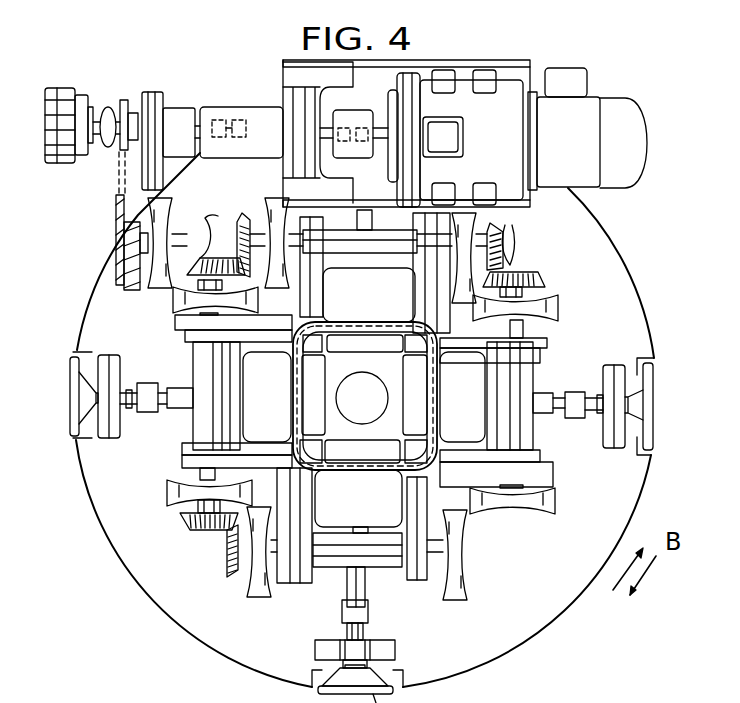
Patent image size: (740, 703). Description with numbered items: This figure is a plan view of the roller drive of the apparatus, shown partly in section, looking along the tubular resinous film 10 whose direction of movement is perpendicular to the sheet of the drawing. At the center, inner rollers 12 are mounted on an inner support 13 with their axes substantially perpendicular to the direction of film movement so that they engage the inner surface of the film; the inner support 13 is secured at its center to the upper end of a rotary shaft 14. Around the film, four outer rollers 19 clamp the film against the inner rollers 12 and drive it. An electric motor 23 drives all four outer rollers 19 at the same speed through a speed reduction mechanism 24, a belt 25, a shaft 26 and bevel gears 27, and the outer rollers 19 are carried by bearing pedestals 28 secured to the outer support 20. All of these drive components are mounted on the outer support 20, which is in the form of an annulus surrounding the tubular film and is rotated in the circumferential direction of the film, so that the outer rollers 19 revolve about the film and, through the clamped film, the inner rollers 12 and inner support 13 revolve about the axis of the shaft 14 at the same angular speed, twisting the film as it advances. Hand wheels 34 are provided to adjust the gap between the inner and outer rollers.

The tubular resinous film 10 is at (295, 377).
The inner rollers 12 is at (397, 342).
The inner support 13 is at (338, 460).
The rotary shaft 14 is at (362, 398).
The outer rollers 19 is at (345, 297).
The outer support 20 is at (505, 652).
The electric motor 23 is at (578, 113).
The speed reduction mechanism 24 is at (273, 120).
The belt 25 is at (120, 178).
The shaft 26 is at (190, 238).
The bevel gears 27 is at (220, 230).
The bearing pedestals 28 is at (290, 575).
The hand wheels 34 is at (72, 390).